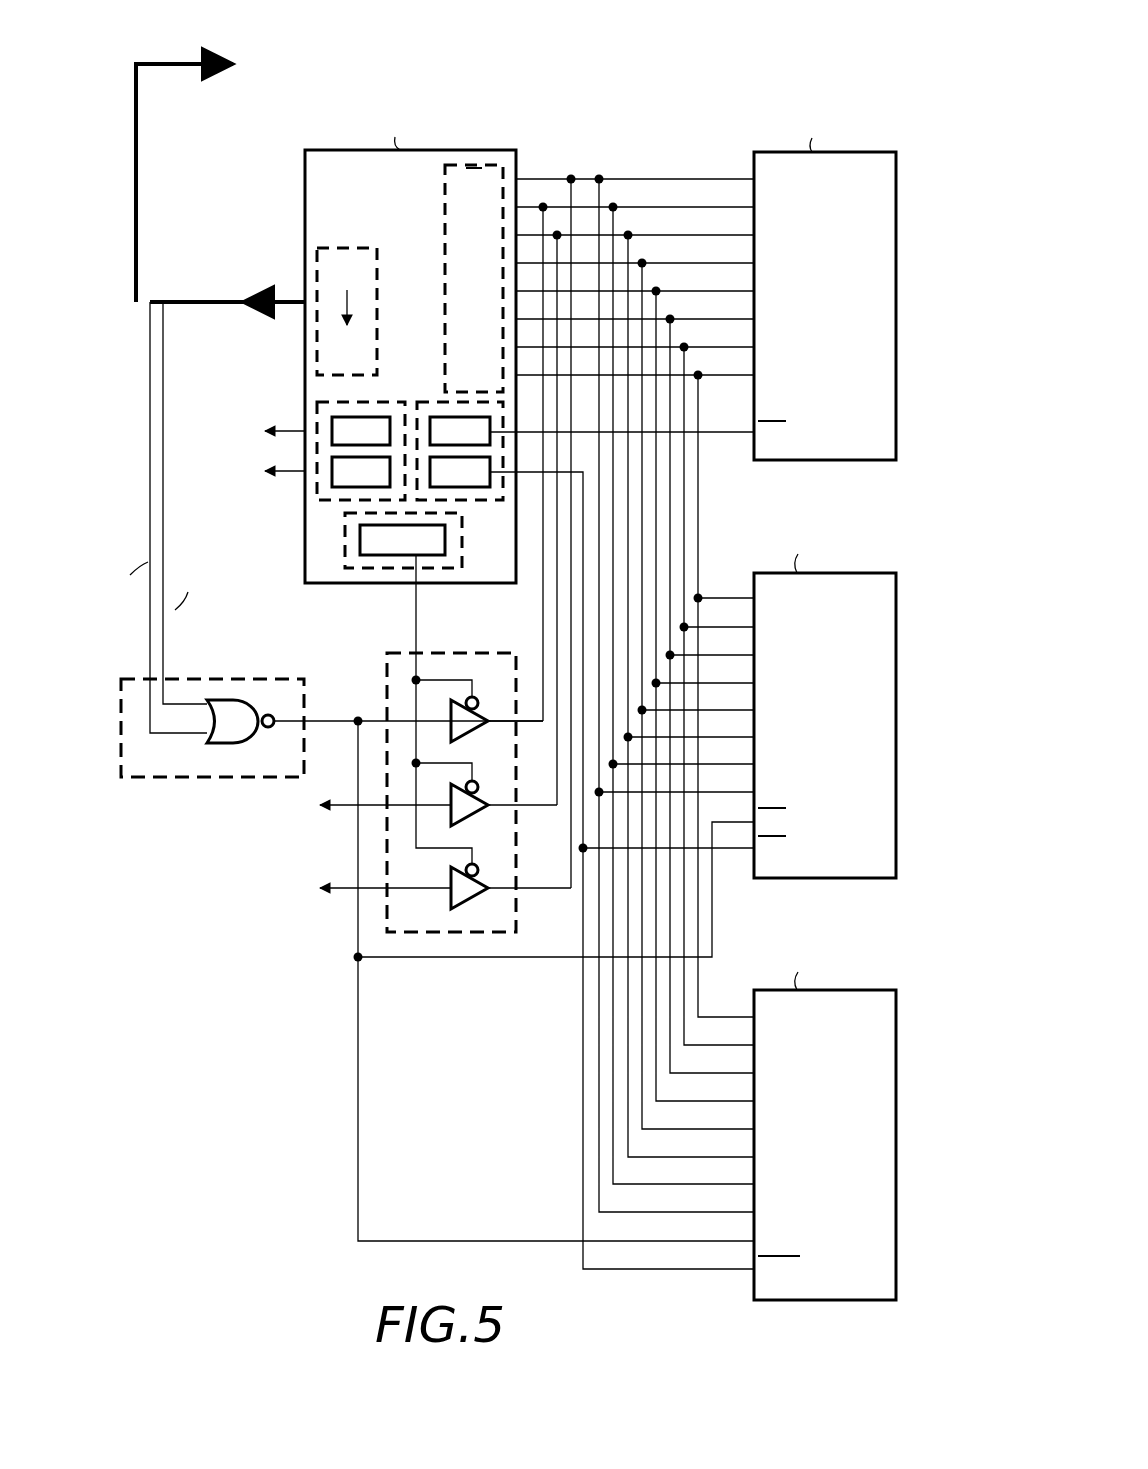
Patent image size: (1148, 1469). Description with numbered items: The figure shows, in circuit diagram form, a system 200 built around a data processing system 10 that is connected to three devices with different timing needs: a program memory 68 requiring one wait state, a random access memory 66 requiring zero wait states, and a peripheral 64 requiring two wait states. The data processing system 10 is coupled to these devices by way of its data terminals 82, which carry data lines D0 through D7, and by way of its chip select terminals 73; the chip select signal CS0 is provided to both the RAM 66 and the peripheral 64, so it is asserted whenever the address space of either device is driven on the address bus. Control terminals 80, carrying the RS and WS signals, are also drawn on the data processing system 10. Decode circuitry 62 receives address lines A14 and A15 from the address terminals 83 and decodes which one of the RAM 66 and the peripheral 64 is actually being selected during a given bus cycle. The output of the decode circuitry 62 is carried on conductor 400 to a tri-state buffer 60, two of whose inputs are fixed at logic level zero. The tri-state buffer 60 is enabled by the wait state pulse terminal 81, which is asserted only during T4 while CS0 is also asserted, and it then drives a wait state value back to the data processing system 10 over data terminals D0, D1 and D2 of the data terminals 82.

The system 200 is at (712, 38).
The data processing system 10 is at (333, 191).
The data terminals 82 is at (537, 238).
The address terminals 83 is at (269, 292).
The chip select terminals 73 is at (337, 410).
The control terminals 80 is at (288, 483).
The wait state pulse terminal 81 is at (326, 593).
The decode circuitry 62 is at (205, 784).
The conductor 400 is at (337, 721).
The tri-state buffer 60 is at (389, 832).
The program memory 68 is at (852, 434).
The RAM 66 is at (852, 850).
The peripheral 64 is at (852, 1270).